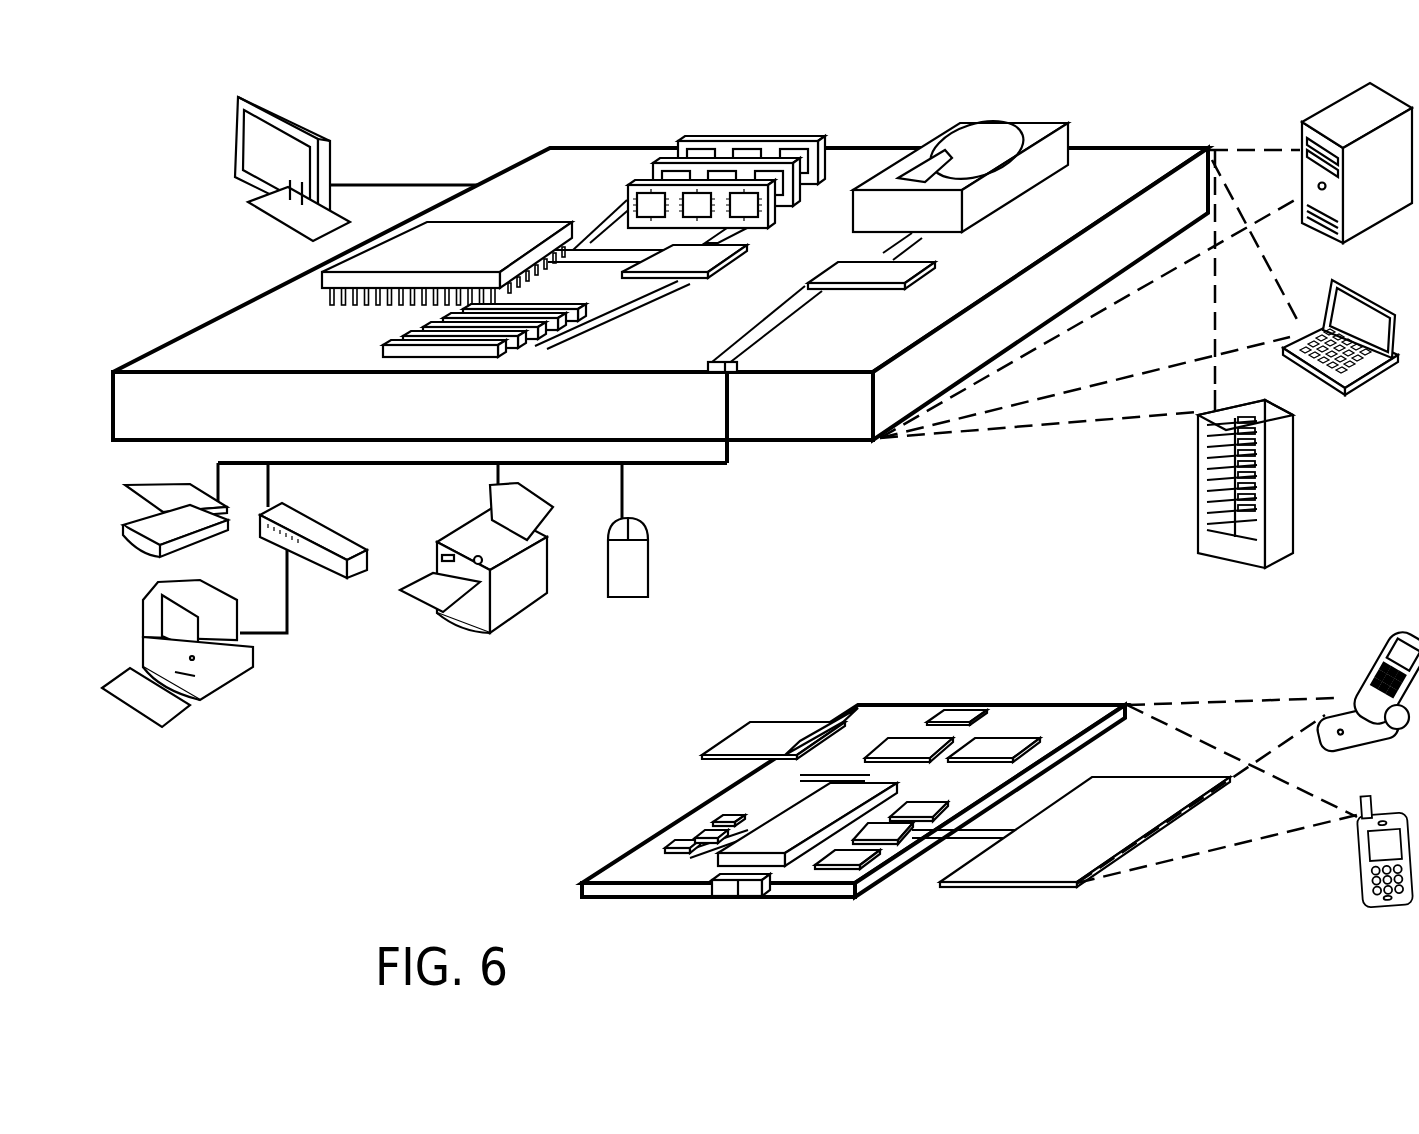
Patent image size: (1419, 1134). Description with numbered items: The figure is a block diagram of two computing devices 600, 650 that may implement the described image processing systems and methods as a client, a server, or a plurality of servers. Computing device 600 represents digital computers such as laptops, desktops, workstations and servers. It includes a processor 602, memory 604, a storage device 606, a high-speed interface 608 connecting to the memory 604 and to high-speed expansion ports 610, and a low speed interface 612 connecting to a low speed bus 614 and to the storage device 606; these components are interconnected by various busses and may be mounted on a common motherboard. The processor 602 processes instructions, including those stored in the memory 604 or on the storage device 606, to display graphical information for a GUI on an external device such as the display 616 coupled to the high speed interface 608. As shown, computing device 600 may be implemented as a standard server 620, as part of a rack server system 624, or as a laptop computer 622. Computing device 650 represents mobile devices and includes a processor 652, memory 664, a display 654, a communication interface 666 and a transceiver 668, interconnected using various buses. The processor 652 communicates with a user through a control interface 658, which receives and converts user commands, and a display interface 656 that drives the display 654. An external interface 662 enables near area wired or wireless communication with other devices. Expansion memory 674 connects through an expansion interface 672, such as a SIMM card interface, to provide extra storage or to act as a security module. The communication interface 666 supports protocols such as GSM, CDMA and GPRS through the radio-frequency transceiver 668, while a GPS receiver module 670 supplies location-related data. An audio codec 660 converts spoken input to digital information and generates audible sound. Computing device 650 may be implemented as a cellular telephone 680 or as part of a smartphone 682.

The computing device 600 is at (468, 110).
The processor 602 is at (322, 283).
The memory 604 is at (713, 140).
The storage device 606 is at (950, 123).
The high-speed interface 608 is at (658, 260).
The high-speed expansion ports 610 is at (405, 334).
The low speed interface 612 is at (870, 265).
The low speed bus 614 is at (737, 371).
The display 616 is at (238, 97).
The standard server 620 is at (1300, 128).
The laptop computer 622 is at (1332, 284).
The rack server system 624 is at (1198, 512).
The computing device 650 is at (832, 672).
The processor 652 is at (770, 866).
The display 654 is at (1082, 883).
The display interface 656 is at (866, 866).
The control interface 658 is at (905, 838).
The audio codec 660 is at (917, 812).
The external interface 662 is at (752, 878).
The memory 664 is at (683, 845).
The communication interface 666 is at (912, 745).
The transceiver 668 is at (995, 745).
The GPS receiver module 670 is at (947, 712).
The expansion interface 672 is at (838, 718).
The expansion memory 674 is at (757, 720).
The cellular telephone 680 is at (1386, 638).
The smartphone 682 is at (1366, 795).